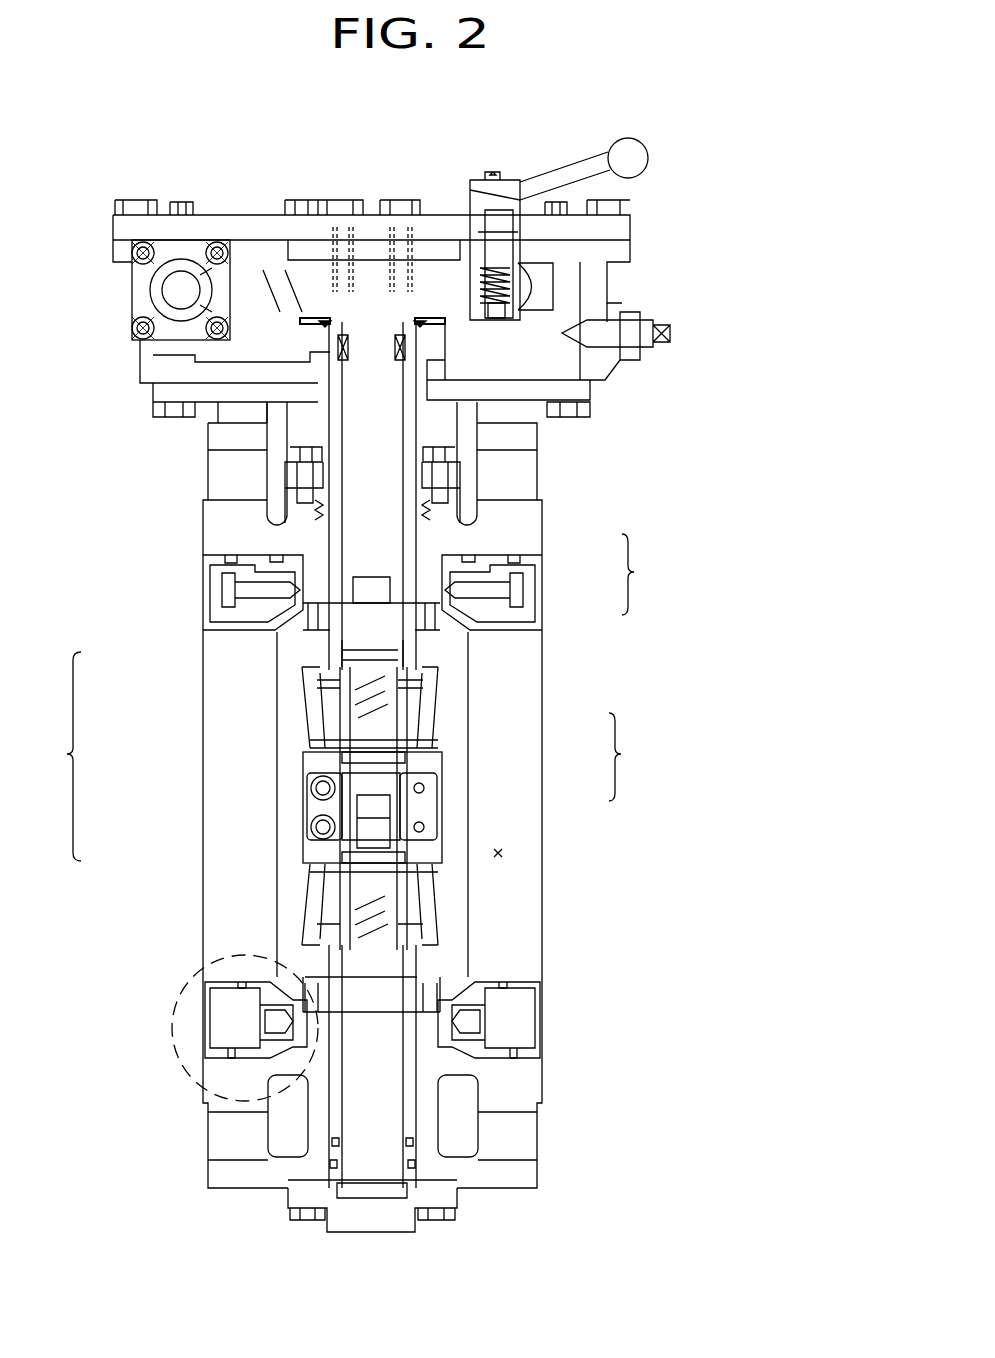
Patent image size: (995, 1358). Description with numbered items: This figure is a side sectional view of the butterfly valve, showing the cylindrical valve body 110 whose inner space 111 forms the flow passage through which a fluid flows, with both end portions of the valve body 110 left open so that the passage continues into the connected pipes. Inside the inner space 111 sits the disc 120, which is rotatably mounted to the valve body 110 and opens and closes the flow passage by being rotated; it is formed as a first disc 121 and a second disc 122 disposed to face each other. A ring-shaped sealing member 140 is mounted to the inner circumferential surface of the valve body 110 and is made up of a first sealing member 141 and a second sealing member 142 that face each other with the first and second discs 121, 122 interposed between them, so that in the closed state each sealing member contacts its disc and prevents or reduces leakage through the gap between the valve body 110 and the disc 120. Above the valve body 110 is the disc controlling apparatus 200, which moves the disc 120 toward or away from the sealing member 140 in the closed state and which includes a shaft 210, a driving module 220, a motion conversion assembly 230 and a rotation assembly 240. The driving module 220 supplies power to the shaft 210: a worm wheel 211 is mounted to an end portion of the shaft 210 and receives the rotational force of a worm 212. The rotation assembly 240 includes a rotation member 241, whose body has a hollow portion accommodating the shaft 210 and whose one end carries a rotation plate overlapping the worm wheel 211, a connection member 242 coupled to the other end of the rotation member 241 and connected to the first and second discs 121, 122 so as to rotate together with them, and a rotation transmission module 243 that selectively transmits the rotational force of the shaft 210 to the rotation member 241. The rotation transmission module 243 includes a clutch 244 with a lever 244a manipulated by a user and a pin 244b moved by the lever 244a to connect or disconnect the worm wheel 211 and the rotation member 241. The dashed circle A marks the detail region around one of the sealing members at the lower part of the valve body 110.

The valve body 110 is at (524, 519).
The inner space 111 is at (500, 852).
The disc 120 is at (478, 808).
The first disc 121 is at (292, 732).
The second disc 122 is at (450, 740).
The sealing member 140 is at (644, 574).
The first sealing member 141 is at (440, 549).
The second sealing member 142 is at (455, 578).
The disc controlling apparatus 200 is at (56, 756).
The shaft 210 is at (323, 765).
The worm wheel 211 is at (525, 285).
The worm 212 is at (182, 283).
The driving module 220 is at (126, 306).
The motion conversion assembly 230 is at (296, 825).
The rotation assembly 240 is at (320, 538).
The rotation member 241 is at (412, 433).
The connection member 242 is at (415, 650).
The rotation transmission module 243 is at (530, 165).
The clutch 244 is at (465, 290).
The lever 244a is at (628, 150).
The pin 244b is at (500, 312).
The detail region A is at (178, 996).